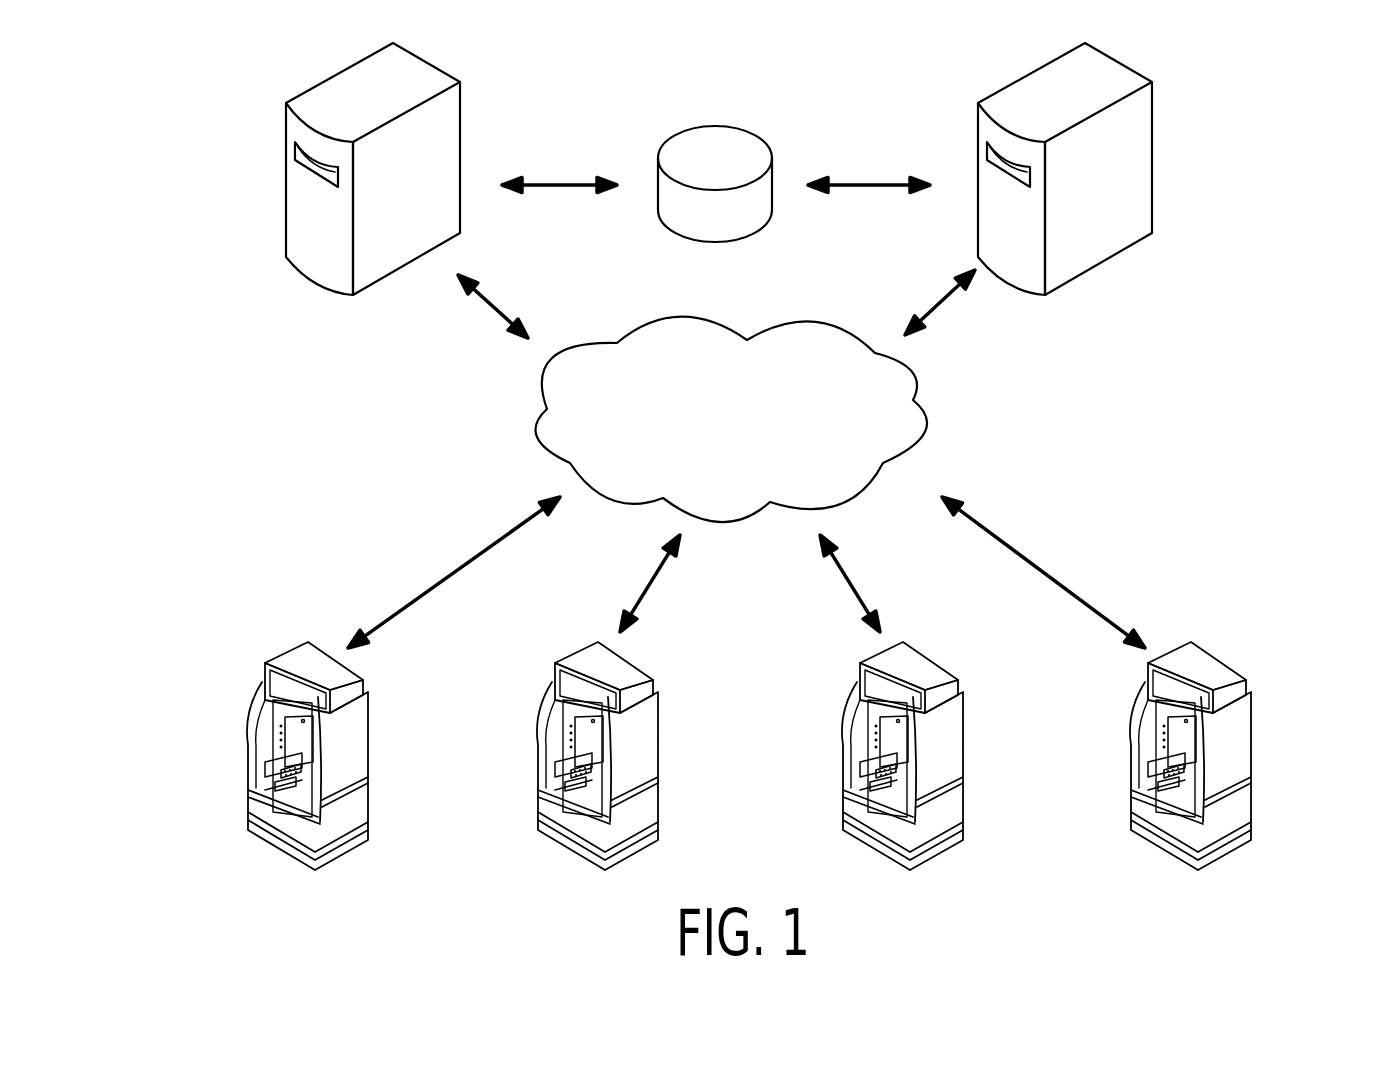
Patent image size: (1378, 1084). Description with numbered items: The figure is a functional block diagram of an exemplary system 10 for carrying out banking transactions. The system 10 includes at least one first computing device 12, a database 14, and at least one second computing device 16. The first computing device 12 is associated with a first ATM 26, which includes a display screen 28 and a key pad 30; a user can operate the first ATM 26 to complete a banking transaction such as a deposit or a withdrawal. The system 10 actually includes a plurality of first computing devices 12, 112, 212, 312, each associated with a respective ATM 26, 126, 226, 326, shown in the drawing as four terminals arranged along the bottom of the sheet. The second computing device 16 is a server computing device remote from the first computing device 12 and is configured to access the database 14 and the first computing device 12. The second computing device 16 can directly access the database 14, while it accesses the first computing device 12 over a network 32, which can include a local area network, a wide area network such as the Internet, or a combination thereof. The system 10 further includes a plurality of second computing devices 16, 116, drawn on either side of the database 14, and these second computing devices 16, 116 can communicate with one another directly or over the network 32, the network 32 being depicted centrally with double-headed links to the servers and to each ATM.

The system 10 is at (735, 504).
The first computing device 12 is at (241, 756).
The first ATM 26 is at (241, 756).
The database 14 is at (690, 147).
The second computing device 16 is at (245, 211).
The second computing device 116 is at (1205, 164).
The network 32 is at (535, 440).
The display screen 28 is at (298, 738).
The key pad 30 is at (275, 763).
The first computing device 112 is at (531, 786).
The ATM 126 is at (537, 862).
The first computing device 212 is at (964, 789).
The ATM 226 is at (950, 875).
The first computing device 312 is at (1242, 725).
The ATM 326 is at (1238, 644).